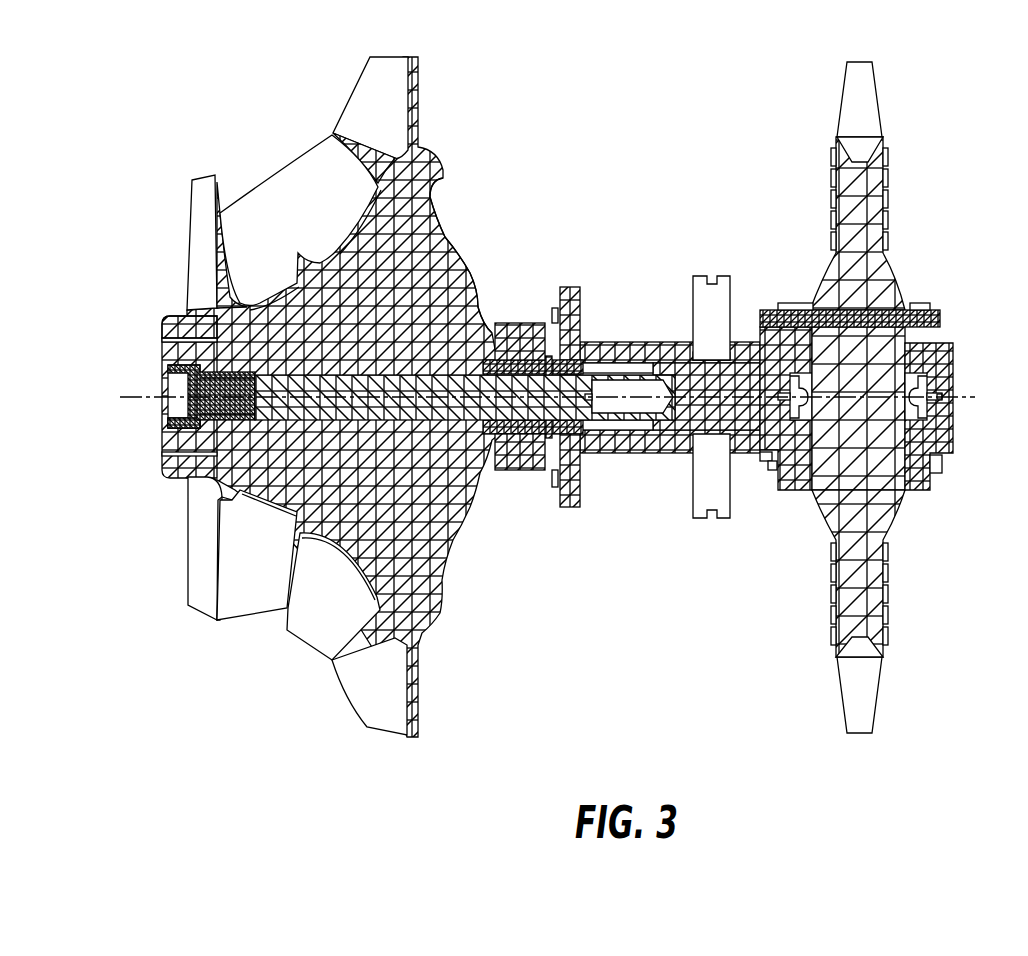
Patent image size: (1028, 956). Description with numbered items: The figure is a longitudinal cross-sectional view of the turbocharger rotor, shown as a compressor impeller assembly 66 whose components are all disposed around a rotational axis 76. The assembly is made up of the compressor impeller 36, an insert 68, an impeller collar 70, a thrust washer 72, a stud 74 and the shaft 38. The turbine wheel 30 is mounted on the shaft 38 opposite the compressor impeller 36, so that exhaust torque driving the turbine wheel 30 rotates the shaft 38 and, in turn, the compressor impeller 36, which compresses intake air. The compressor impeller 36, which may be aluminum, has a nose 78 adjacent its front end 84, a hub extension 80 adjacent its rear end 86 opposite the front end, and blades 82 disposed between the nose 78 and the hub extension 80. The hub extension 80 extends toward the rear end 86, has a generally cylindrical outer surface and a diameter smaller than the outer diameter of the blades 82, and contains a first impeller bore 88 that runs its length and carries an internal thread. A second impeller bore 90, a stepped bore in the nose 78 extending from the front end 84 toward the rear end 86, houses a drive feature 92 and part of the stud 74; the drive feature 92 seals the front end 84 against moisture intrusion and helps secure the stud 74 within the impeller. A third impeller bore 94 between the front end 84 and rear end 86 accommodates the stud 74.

The turbine wheel 30 is at (878, 507).
The compressor impeller 36 is at (264, 341).
The shaft 38 is at (750, 410).
The compressor impeller assembly 66 is at (563, 147).
The insert 68 is at (495, 333).
The impeller collar 70 is at (612, 345).
The thrust washer 72 is at (717, 305).
The stud 74 is at (273, 407).
The rotational axis 76 is at (957, 397).
The nose 78 is at (173, 325).
The hub extension 80 is at (508, 450).
The blades 82 is at (322, 628).
The front end 84 is at (117, 470).
The rear end 86 is at (532, 484).
The first impeller bore 88 is at (512, 335).
The second impeller bore 90 is at (163, 358).
The drive feature 92 is at (167, 423).
The third impeller bore 94 is at (448, 284).